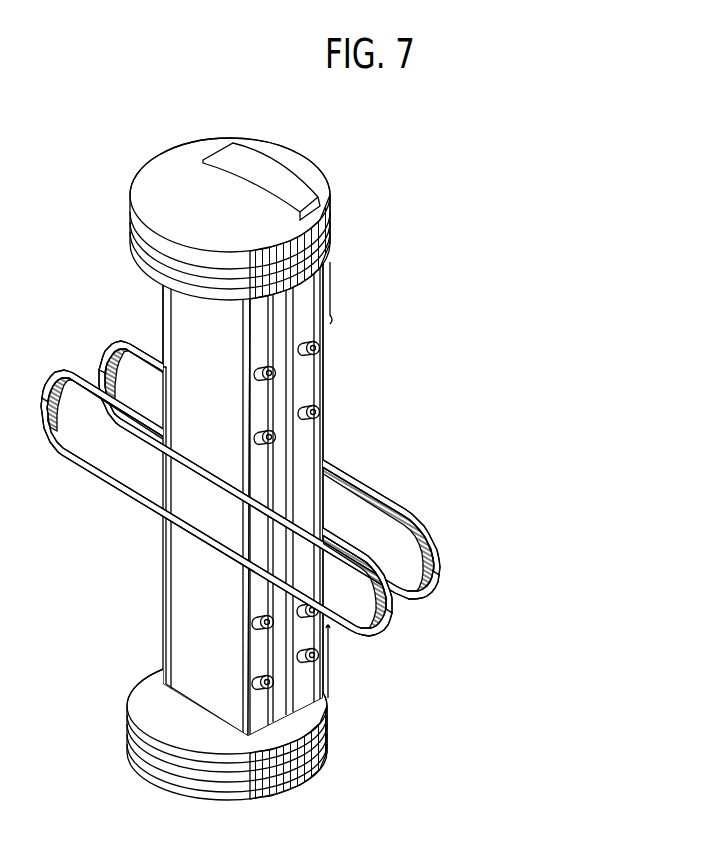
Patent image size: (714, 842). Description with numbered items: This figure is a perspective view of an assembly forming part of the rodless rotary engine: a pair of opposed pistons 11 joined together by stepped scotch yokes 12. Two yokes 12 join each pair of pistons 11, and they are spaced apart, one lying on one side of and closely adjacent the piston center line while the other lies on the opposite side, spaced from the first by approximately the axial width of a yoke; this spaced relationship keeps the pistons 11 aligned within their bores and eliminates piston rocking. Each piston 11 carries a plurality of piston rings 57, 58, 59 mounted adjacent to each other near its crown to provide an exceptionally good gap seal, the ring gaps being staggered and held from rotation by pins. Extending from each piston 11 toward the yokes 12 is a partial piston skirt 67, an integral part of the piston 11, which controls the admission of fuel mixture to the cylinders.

The piston 11 is at (147, 181).
The stepped scotch yoke 12 is at (48, 404).
The piston ring 57 is at (146, 742).
The piston ring 58 is at (156, 758).
The piston ring 59 is at (166, 773).
The partial piston skirt 67 is at (331, 318).